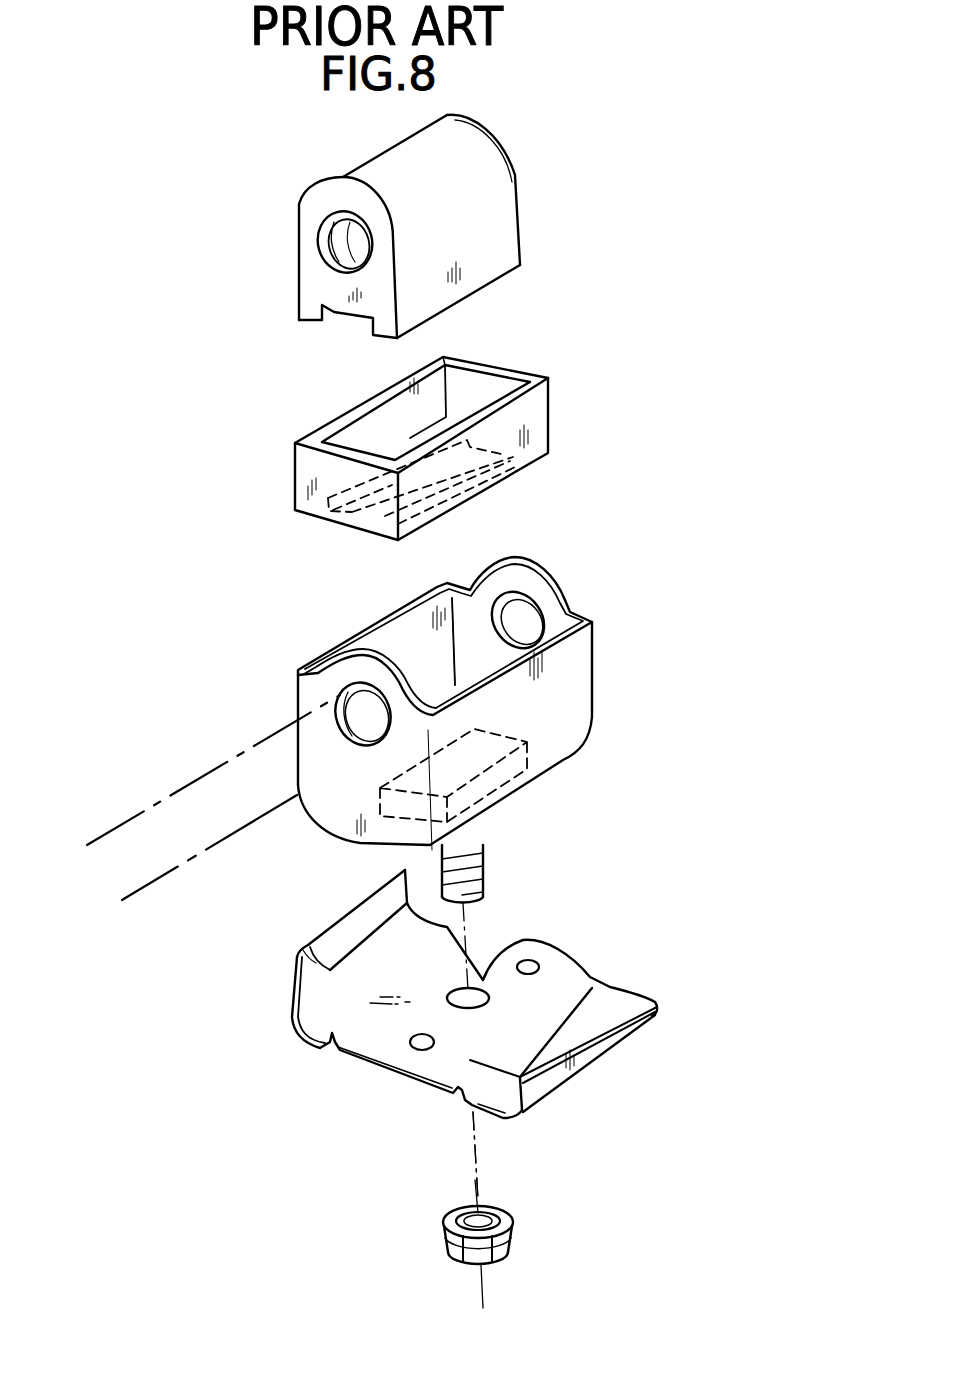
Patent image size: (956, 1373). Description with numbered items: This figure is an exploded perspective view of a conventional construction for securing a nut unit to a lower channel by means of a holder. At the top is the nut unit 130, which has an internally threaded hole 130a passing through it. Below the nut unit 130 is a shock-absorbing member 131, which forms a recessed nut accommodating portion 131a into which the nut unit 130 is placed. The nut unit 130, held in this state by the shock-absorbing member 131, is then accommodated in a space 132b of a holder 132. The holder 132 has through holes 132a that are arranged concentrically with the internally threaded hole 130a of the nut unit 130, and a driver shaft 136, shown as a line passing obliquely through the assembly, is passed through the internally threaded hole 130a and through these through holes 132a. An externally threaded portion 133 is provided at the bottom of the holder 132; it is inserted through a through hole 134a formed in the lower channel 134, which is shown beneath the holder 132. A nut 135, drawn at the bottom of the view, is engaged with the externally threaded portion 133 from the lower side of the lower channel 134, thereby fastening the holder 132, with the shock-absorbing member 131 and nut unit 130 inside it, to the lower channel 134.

The nut unit 130 is at (490, 182).
The internally threaded hole 130a is at (318, 248).
The shock-absorbing member 131 is at (537, 405).
The nut accommodating portion 131a is at (477, 362).
The holder 132 is at (577, 693).
The through holes 132a is at (340, 678).
The space 132b is at (428, 665).
The externally threaded portion 133 is at (484, 845).
The lower channel 134 is at (597, 1033).
The through hole 134a is at (478, 992).
The nut 135 is at (515, 1230).
The driver shaft 136 is at (140, 792).